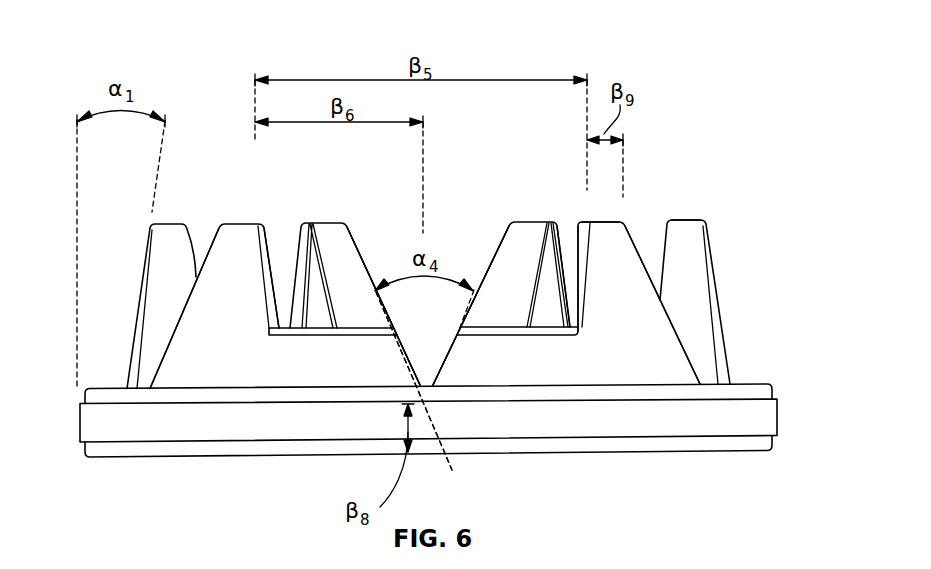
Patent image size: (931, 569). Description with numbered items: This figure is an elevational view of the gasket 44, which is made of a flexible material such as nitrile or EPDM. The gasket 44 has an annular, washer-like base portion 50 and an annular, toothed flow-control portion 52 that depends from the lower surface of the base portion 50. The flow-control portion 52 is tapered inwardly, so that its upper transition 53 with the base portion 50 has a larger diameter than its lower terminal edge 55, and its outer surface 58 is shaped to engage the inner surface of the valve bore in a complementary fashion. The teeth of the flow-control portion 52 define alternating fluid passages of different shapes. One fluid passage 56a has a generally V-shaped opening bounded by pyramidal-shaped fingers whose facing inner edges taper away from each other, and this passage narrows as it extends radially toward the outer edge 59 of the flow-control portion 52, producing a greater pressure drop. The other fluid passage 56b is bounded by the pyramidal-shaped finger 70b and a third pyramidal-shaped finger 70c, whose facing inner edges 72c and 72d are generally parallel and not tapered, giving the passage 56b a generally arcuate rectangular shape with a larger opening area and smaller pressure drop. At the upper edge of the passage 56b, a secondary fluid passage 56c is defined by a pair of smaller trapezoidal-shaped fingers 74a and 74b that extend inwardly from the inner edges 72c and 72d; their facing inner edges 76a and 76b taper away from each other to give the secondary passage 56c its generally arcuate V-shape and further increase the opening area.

The gasket 44 is at (768, 344).
The base portion 50 is at (790, 425).
The flow-control portion 52 is at (740, 302).
The upper transition 53 is at (730, 383).
The terminal edge 55 is at (603, 220).
The fluid passage 56a is at (160, 261).
The fluid passage 56b is at (460, 228).
The secondary fluid passage 56c is at (436, 345).
The outer surface 58 is at (220, 363).
The outer edge 59 is at (420, 396).
The pyramidal-shaped finger 70b is at (232, 237).
The pyramidal-shaped finger 70c is at (623, 237).
The inner edge 72c is at (267, 250).
The inner edge 72d is at (578, 297).
The trapezoidal-shaped finger 74a is at (293, 363).
The trapezoidal-shaped finger 74b is at (537, 376).
The inner edge 76a is at (388, 352).
The inner edge 76b is at (438, 372).